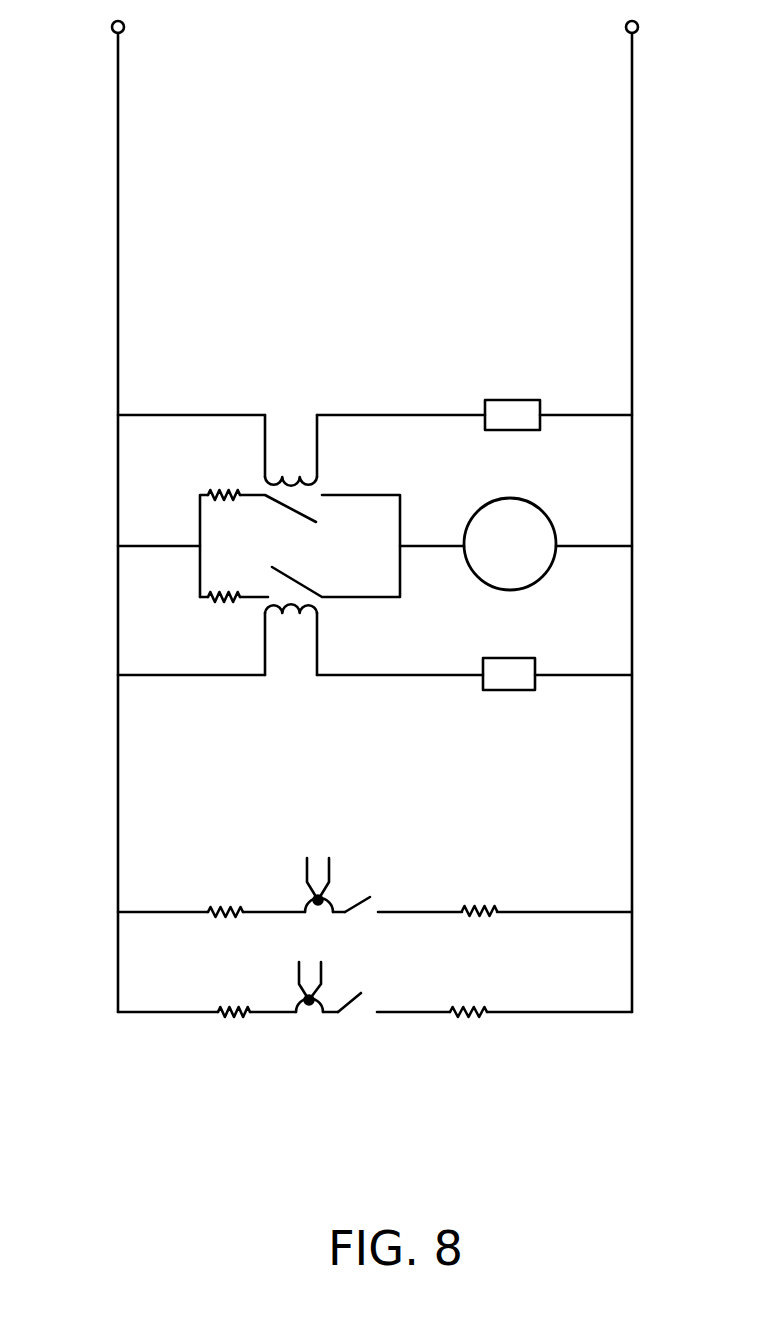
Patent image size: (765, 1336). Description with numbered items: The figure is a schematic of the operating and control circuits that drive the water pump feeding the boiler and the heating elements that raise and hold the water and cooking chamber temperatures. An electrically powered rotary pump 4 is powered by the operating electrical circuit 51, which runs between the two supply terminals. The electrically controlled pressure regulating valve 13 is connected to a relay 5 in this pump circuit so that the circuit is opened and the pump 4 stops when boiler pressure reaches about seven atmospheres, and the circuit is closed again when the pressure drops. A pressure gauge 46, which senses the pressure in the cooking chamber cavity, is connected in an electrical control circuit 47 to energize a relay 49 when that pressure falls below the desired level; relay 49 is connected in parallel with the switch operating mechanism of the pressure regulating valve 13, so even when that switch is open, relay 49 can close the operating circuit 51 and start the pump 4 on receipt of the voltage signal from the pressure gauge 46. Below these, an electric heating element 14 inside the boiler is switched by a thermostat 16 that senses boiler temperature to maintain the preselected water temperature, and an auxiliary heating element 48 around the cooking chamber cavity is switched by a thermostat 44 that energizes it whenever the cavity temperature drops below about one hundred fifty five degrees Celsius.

The operating electrical circuit 51 is at (118, 378).
The pressure regulating valve 13 is at (512, 400).
The relay 5 is at (265, 437).
The electrical control circuit 47 is at (370, 495).
The rotary pump 4 is at (545, 572).
The relay 49 is at (318, 643).
The pressure gauge 46 is at (508, 690).
The thermostat 16 is at (330, 872).
The electric heating element 14 is at (497, 908).
The thermostat 44 is at (298, 975).
The auxiliary heating element 48 is at (487, 1015).